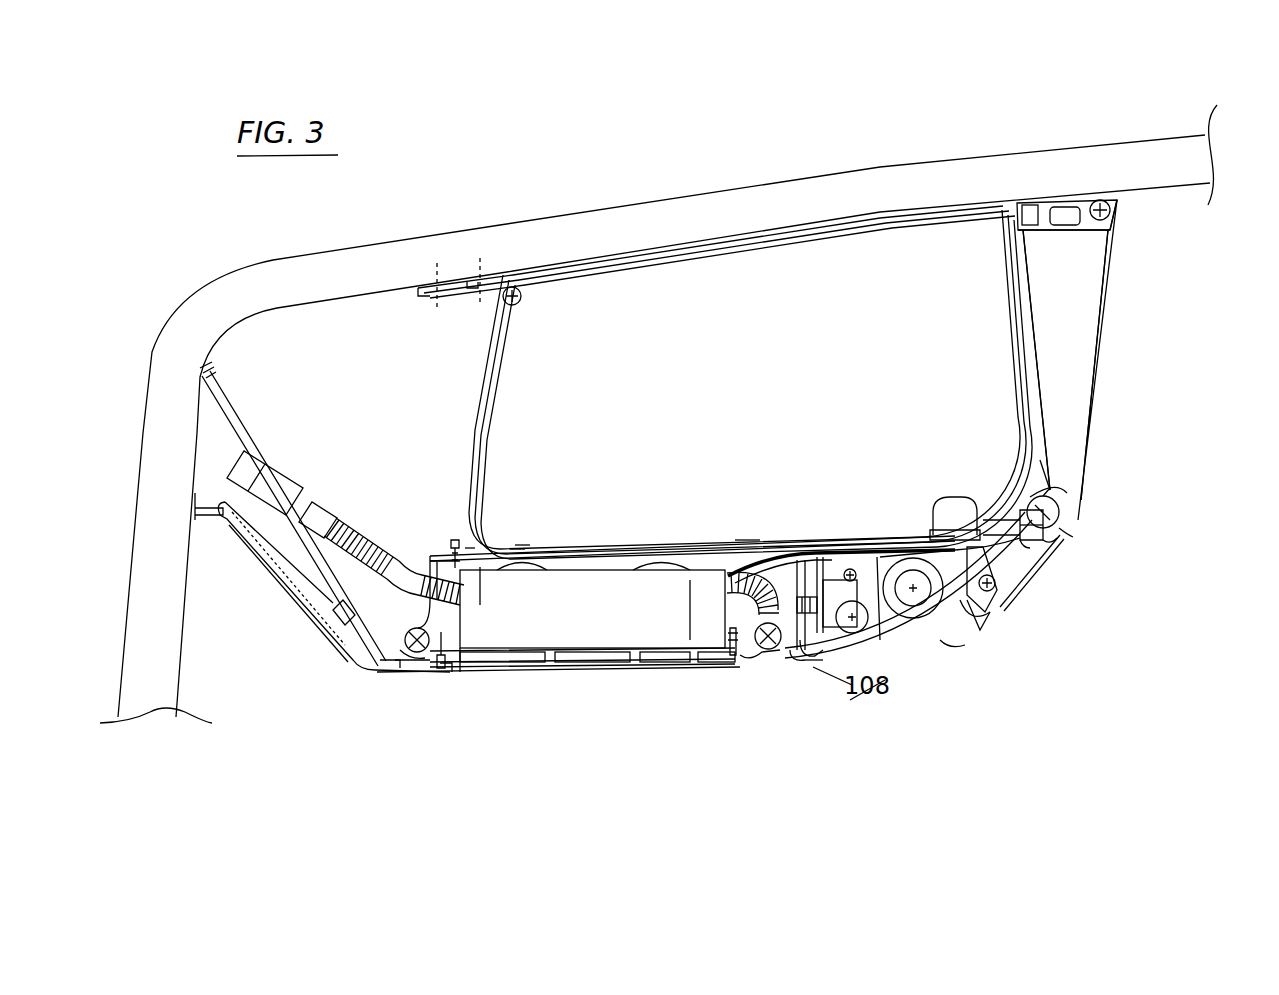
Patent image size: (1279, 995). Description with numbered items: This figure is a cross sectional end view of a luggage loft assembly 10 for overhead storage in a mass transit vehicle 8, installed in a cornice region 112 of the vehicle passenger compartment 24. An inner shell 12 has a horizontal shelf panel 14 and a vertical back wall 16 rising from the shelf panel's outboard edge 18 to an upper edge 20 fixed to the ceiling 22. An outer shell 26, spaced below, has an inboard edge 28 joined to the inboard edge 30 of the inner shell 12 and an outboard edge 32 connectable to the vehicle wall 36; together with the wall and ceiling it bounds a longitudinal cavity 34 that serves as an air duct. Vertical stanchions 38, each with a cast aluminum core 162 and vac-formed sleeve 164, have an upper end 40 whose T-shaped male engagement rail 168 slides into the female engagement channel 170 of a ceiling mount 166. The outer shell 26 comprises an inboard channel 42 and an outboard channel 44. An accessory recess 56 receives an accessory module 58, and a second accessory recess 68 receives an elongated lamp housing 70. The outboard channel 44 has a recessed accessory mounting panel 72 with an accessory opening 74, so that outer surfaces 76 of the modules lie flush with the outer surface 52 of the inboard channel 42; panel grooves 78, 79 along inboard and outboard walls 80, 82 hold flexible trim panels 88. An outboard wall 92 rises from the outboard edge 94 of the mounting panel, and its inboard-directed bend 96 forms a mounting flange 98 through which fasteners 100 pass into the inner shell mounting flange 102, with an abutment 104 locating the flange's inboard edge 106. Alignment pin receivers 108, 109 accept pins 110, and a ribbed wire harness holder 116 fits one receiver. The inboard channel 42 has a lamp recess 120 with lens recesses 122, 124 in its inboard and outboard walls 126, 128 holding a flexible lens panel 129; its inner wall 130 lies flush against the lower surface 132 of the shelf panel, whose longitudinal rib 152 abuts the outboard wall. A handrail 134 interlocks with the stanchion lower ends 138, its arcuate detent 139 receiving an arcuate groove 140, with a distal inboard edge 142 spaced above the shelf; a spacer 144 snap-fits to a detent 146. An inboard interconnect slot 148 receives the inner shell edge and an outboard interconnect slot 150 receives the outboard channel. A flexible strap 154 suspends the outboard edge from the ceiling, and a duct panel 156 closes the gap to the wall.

The mass transit vehicle 8 is at (930, 167).
The luggage loft assembly 10 is at (650, 700).
The inner shell 12 is at (560, 550).
The shelf panel 14 is at (740, 543).
The back wall 16 is at (485, 405).
The outboard edge of the shelf panel 18 is at (517, 547).
The upper edge of the back wall 20 is at (418, 286).
The ceiling 22 is at (358, 295).
The vehicle passenger compartment 24 is at (1180, 316).
The outer shell 26 is at (790, 670).
The inboard edge of the outer shell 28 is at (1067, 513).
The inboard edge of the inner shell 30 is at (1067, 523).
The outboard edge of the outer shell 32 is at (342, 633).
The longitudinal cavity 34 is at (362, 496).
The vehicle passenger compartment wall 36 is at (193, 587).
The stanchions 38 is at (1060, 389).
The upper end of the stanchion 40 is at (1118, 218).
The inboard channel 42 is at (938, 636).
The outboard channel 44 is at (577, 650).
The outer surface of the inboard channel 52 is at (803, 667).
The accessory recess 56 is at (467, 637).
The accessory module 58 is at (667, 612).
The second accessory recess 68 is at (973, 587).
The elongated lamp housing 70 is at (882, 650).
The accessory mounting panel 72 is at (517, 647).
The accessory opening 74 is at (438, 672).
The outer surfaces of the accessory modules 76 is at (592, 672).
The panel groove 78 is at (733, 660).
The panel groove 79 is at (423, 672).
The inboard wall 80 is at (747, 657).
The outboard wall 82 is at (440, 678).
The flexible trim panels 88 is at (540, 672).
The outboard wall of the outboard channel 92 is at (417, 600).
The outboard edge of the mounting panel 94 is at (413, 675).
The inboard-directed bend 96 is at (430, 553).
The outboard channel mounting flange 98 is at (467, 547).
The fasteners 100 is at (453, 538).
The inner shell mounting flange 102 is at (433, 553).
The abutment 104 is at (480, 567).
The inboard edge of the outboard channel mounting flange 106 is at (523, 543).
The alignment pin receiver 108 is at (407, 627).
The alignment pin receiver 109 is at (807, 597).
The pins 110 is at (427, 638).
The cornice region 112 is at (222, 330).
The integrated wire harness holder 116 is at (767, 613).
The lamp recess 120 is at (993, 563).
The lens recess 122 is at (1007, 593).
The lens recess 124 is at (803, 670).
The inboard wall of the lamp recess 126 is at (1063, 653).
The outboard wall of the lamp recess 128 is at (915, 650).
The flexible lens panel 129 is at (943, 653).
The inner wall of the lamp recess 130 is at (887, 650).
The lower surface of the shelf panel 132 is at (1027, 545).
The integrated handrail 134 is at (1050, 488).
The lower ends of the stanchions 138 is at (1067, 493).
The arcuate detent 139 is at (1033, 503).
The arcuate groove 140 is at (1050, 490).
The distal inboard edge of the arcuate detent 142 is at (1027, 533).
The spacer 144 is at (1020, 527).
The detent 146 is at (1057, 538).
The inboard interconnect slot 148 is at (1073, 537).
The outboard interconnect slot 150 is at (770, 680).
The longitudinal rib 152 is at (813, 567).
The flexible strap 154 is at (247, 438).
The duct panel 156 is at (278, 570).
The cast aluminum core 162 is at (1082, 283).
The vac-formed sleeve 164 is at (1100, 353).
The ceiling mount 166 is at (1025, 213).
The male engagement rail 168 is at (1083, 207).
The female engagement channel 170 is at (1047, 215).